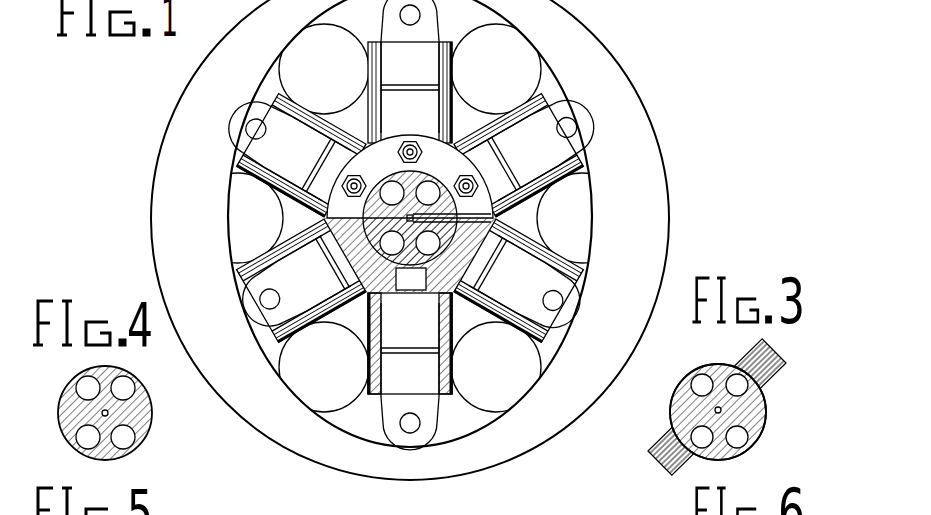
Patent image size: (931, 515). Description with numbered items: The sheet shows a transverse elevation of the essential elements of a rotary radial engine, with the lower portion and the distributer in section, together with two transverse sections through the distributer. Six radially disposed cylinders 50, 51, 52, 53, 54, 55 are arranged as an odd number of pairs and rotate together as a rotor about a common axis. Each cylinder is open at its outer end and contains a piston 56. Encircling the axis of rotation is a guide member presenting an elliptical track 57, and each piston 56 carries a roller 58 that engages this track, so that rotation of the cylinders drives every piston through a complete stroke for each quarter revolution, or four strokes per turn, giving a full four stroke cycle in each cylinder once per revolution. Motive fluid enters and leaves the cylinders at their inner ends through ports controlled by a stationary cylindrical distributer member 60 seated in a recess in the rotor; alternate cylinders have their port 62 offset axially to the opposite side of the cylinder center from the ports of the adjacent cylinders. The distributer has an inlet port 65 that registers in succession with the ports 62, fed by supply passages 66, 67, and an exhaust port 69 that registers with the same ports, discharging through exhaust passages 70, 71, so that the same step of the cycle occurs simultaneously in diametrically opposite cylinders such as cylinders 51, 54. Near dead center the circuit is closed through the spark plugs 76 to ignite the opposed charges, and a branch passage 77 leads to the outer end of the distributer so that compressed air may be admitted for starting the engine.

In FIG. 1, the cylinder 50 is at (445, 66).
In FIG. 1, the cylinder 51 is at (545, 188).
In FIG. 1, the cylinder 52 is at (507, 327).
In FIG. 1, the cylinder 53 is at (370, 373).
In FIG. 1, the cylinder 54 is at (300, 243).
In FIG. 1, the cylinder 55 is at (290, 110).
In FIG. 1, the piston 56 is at (438, 37).
In FIG. 1, the elliptical track 57 is at (315, 23).
In FIG. 1, the roller 58 is at (428, 24).
In FIG. 1, the distributer member 60 is at (438, 195).
In FIG. 3, the distributer member 60 is at (680, 414).
In FIG. 4, the distributer member 60 is at (70, 424).
In FIG. 1, the cylinder port 62 is at (408, 276).
In FIG. 1, the inlet port 65 is at (388, 190).
In FIG. 1, the supply passage 66 is at (460, 230).
In FIG. 3, the supply passage 66 is at (742, 438).
In FIG. 4, the supply passage 66 is at (130, 440).
In FIG. 3, the supply passage 67 is at (697, 388).
In FIG. 4, the supply passage 67 is at (83, 388).
In FIG. 1, the exhaust port 69 is at (366, 213).
In FIG. 1, the exhaust passage 70 is at (408, 167).
In FIG. 3, the exhaust passage 70 is at (743, 389).
In FIG. 4, the exhaust passage 70 is at (130, 390).
In FIG. 3, the exhaust passage 71 is at (700, 432).
In FIG. 4, the exhaust passage 71 is at (82, 440).
In FIG. 1, the spark plug 76 is at (410, 140).
In FIG. 3, the branch passage 77 is at (722, 414).
In FIG. 4, the branch passage 77 is at (108, 413).